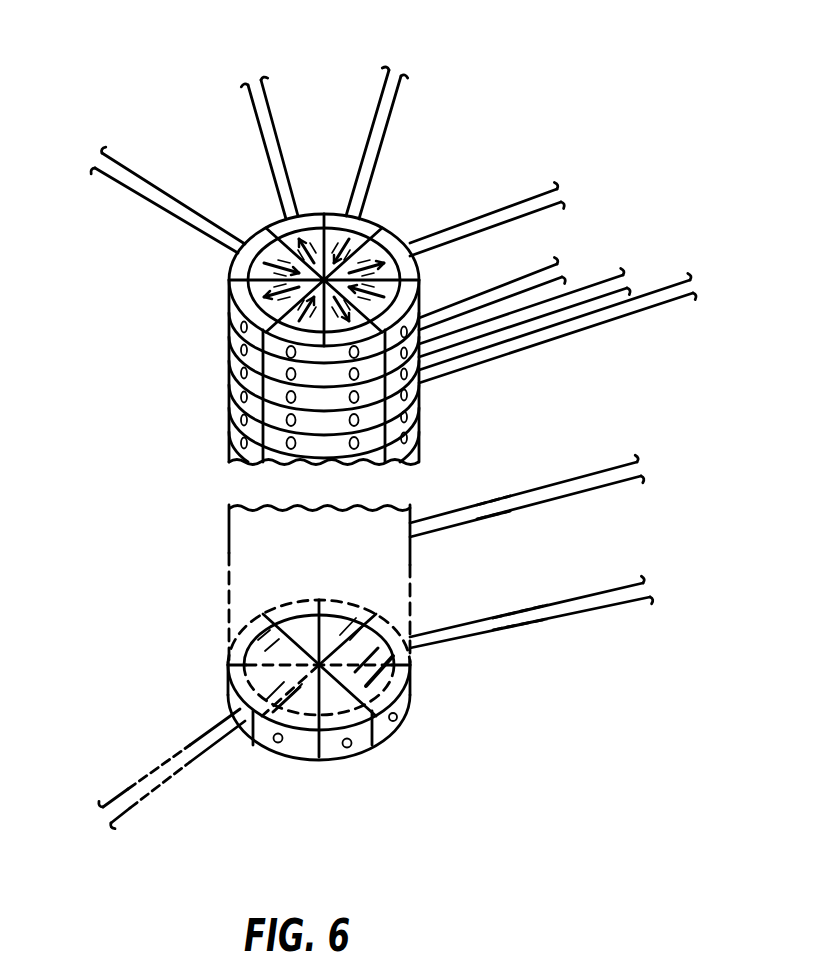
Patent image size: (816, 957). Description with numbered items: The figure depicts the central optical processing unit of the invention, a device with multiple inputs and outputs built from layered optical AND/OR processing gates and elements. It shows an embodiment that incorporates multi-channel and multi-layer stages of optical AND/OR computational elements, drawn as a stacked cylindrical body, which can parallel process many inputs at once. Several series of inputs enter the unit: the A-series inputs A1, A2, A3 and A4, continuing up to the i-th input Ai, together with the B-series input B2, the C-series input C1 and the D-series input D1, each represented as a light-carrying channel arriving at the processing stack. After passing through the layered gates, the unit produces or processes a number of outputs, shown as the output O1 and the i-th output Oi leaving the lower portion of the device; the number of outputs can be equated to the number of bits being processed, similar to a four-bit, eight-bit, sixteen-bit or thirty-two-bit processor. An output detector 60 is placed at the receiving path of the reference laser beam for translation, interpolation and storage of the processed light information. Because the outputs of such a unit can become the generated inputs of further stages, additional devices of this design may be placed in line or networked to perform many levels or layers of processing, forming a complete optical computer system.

The input D1 is at (142, 193).
The input C1 is at (269, 123).
The input B2 is at (389, 116).
The input A1 is at (508, 212).
The input A2 is at (515, 284).
The input A3 is at (546, 299).
The input A4 is at (580, 326).
The input Ai is at (544, 492).
The output O1 is at (552, 610).
The output Oi is at (150, 791).
The output detector 60 is at (411, 712).